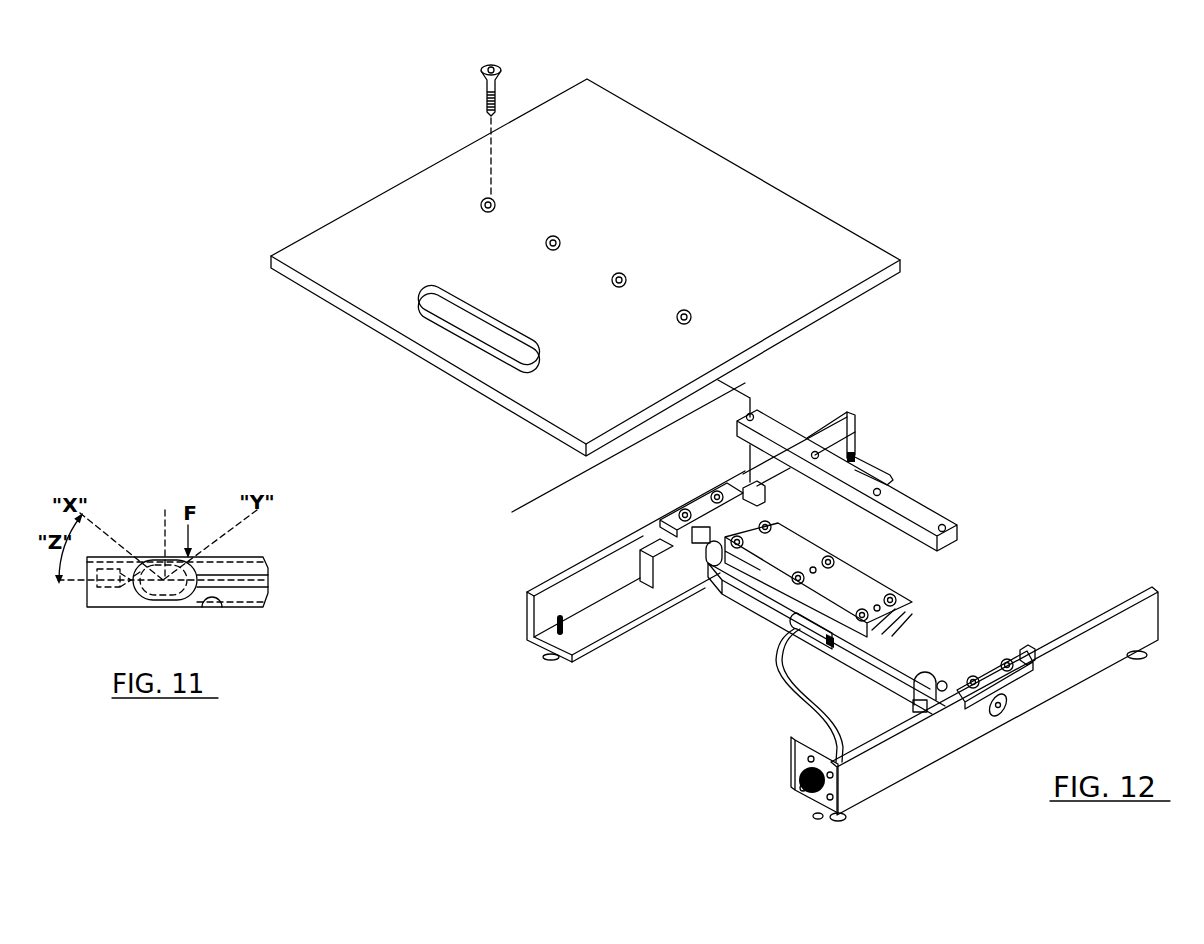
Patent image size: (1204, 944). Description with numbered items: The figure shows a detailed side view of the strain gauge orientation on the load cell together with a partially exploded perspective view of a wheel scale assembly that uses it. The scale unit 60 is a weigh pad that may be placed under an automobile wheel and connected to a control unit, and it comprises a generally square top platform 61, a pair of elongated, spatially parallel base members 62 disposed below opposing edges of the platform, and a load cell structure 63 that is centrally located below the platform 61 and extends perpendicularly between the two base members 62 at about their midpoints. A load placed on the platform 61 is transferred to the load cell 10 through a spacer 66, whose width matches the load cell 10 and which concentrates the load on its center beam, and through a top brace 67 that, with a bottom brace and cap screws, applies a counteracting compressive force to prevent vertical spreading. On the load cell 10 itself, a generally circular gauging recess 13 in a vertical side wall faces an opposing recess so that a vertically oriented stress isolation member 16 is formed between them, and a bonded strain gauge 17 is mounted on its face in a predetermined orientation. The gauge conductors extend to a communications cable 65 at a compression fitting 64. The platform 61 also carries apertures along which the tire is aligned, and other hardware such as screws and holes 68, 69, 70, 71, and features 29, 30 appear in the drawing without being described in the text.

In FIG. 12, the load cell 10 is at (927, 647).
In FIG. 12, the gauging recess 13 is at (709, 562).
In FIG. 11, the stress isolation member 16 is at (145, 596).
In FIG. 11, the strain gauge 17 is at (137, 591).
In FIG. 11, the slot 29 is at (204, 607).
In FIG. 11, the passage 30 is at (227, 533).
In FIG. 12, the scale unit 60 is at (1070, 322).
In FIG. 12, the top platform 61 is at (238, 265).
In FIG. 12, the base member 62 is at (498, 681).
In FIG. 12, the load cell structure 63 is at (694, 693).
In FIG. 12, the compression fitting 64 is at (790, 627).
In FIG. 12, the communications cable 65 is at (778, 670).
In FIG. 12, the spacer 66 is at (933, 518).
In FIG. 12, the top brace 67 is at (877, 590).
In FIG. 12, the screw 68 is at (500, 70).
In FIG. 12, the screw hole 69 is at (561, 242).
In FIG. 12, the support bar 70 is at (887, 487).
In FIG. 12, the hole 71 is at (815, 575).